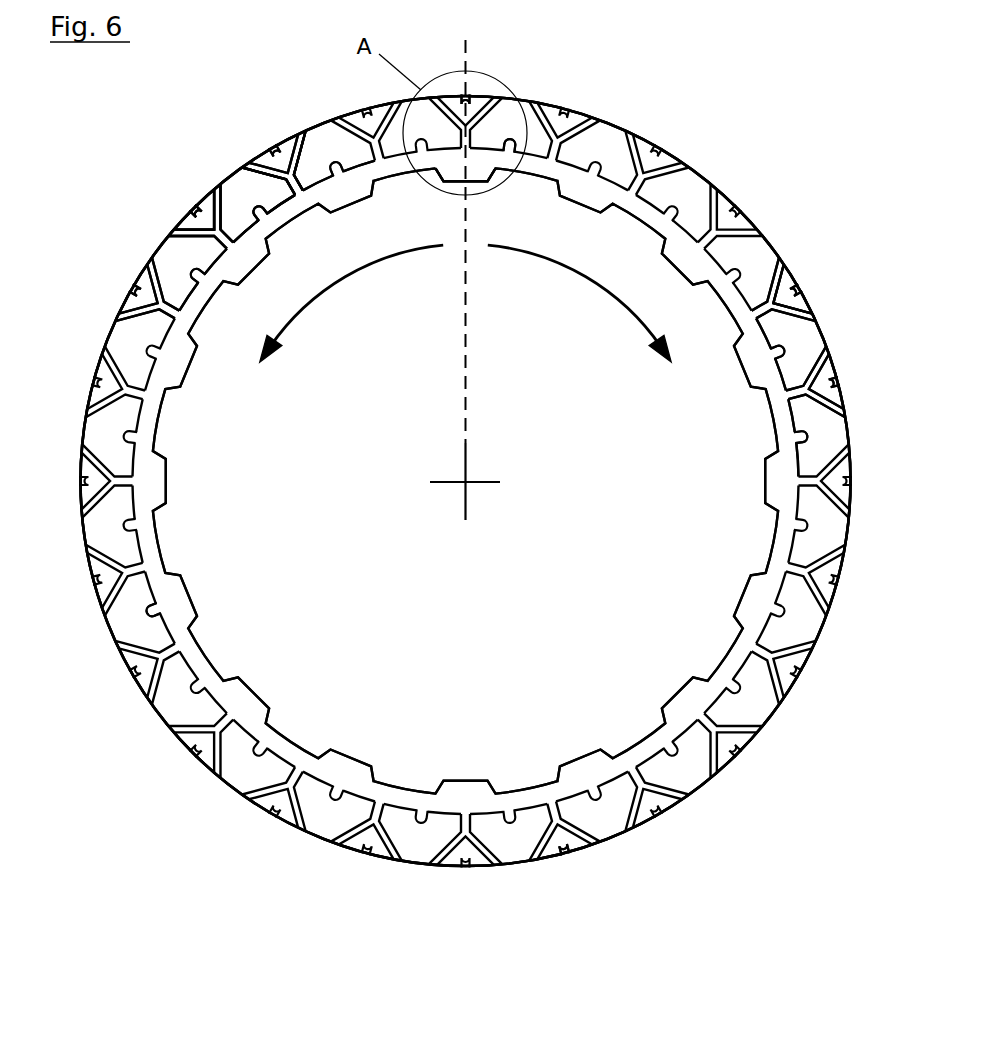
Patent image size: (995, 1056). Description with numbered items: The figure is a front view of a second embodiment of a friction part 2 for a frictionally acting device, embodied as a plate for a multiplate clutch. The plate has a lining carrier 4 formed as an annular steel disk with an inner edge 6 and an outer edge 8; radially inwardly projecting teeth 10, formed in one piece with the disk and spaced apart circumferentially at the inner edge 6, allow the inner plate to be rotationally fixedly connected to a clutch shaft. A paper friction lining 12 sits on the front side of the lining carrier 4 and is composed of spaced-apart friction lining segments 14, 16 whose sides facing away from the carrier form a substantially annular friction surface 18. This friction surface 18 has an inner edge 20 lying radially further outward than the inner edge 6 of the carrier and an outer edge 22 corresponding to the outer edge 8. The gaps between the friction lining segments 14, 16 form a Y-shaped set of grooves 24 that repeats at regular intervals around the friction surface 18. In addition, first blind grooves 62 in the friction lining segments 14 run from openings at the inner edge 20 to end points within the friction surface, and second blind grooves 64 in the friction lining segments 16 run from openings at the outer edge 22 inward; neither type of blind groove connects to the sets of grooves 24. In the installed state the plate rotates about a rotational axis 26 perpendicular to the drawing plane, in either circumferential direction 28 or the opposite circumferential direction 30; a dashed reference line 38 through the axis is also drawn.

The friction part 2 is at (796, 82).
The lining carrier 4 is at (402, 805).
The inner edge 6 is at (648, 745).
The outer edge 8 is at (755, 722).
The teeth 10 is at (742, 601).
The friction lining 12 is at (770, 246).
The friction lining segments 14 is at (190, 261).
The friction lining segments 16 is at (183, 227).
The friction surface 18 is at (235, 198).
The inner edge 20 is at (327, 178).
The outer edge 22 is at (285, 138).
The Y-shaped set of grooves 24 is at (497, 113).
The rotational axis 26 is at (470, 486).
The circumferential direction 28 is at (330, 289).
The circumferential direction 30 is at (600, 289).
The reference plane 38 is at (463, 353).
The first blind grooves 62 is at (411, 156).
The second blind grooves 64 is at (478, 97).